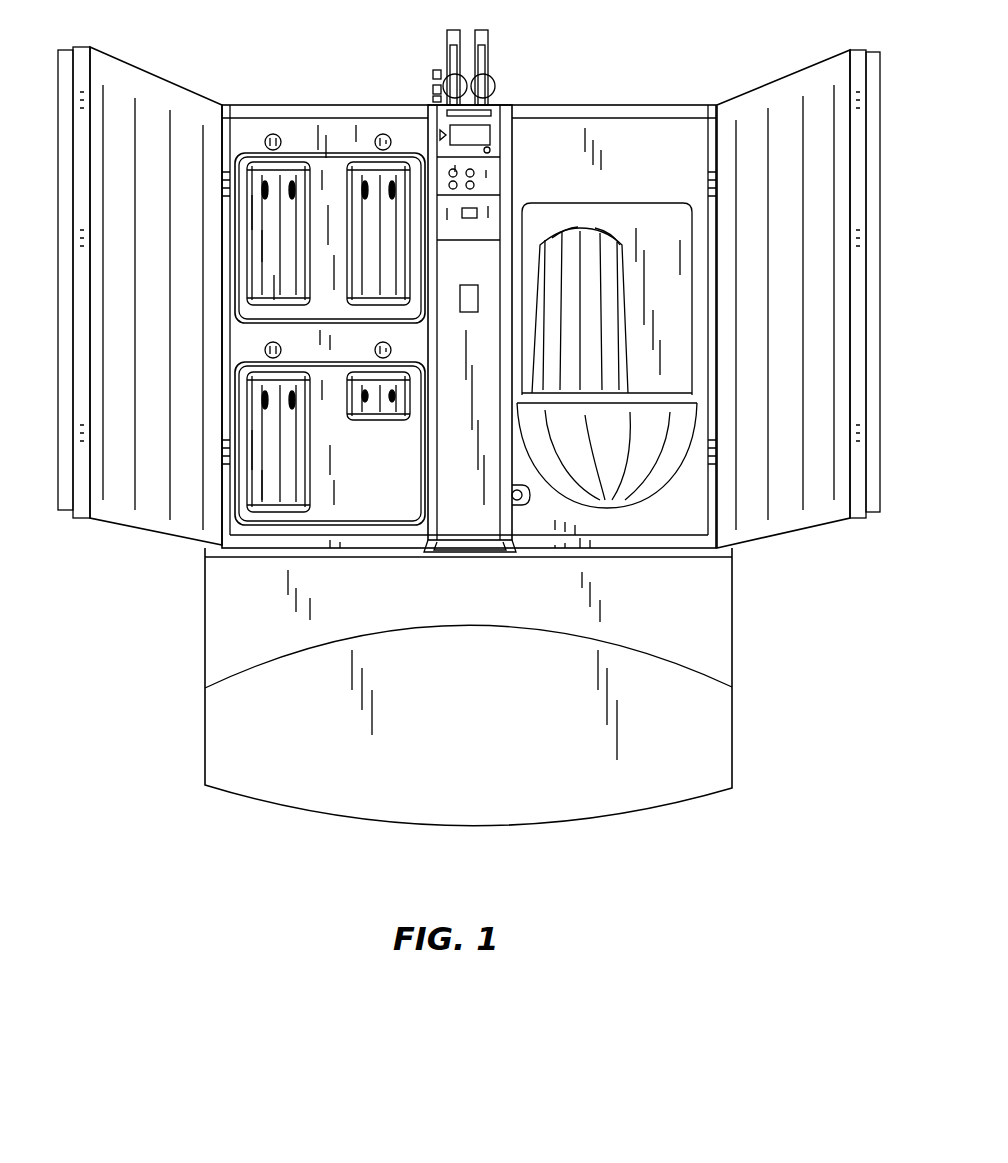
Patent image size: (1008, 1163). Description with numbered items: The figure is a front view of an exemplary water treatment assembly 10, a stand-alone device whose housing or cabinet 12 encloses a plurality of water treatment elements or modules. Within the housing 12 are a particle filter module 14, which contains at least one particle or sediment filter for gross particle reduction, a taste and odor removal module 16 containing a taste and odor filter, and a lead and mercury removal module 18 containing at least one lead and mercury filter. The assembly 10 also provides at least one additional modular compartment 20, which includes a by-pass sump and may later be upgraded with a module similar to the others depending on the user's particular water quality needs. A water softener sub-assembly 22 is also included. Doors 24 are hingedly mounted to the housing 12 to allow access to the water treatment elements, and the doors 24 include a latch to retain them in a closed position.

The water treatment assembly 10 is at (793, 594).
The housing 12 is at (710, 637).
The particle filter module 14 is at (375, 185).
The taste and odor removal module 16 is at (278, 190).
The lead and mercury removal module 18 is at (277, 508).
The modular compartment 20 is at (372, 420).
The water softener sub-assembly 22 is at (606, 98).
The doors 24 is at (146, 516).